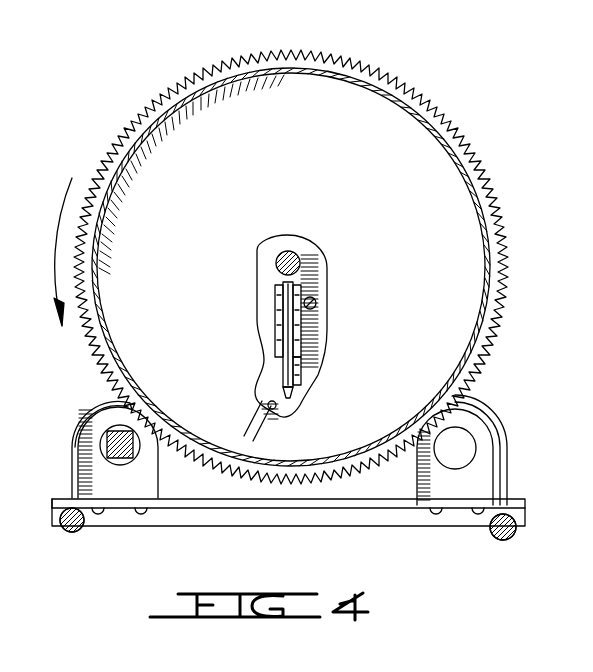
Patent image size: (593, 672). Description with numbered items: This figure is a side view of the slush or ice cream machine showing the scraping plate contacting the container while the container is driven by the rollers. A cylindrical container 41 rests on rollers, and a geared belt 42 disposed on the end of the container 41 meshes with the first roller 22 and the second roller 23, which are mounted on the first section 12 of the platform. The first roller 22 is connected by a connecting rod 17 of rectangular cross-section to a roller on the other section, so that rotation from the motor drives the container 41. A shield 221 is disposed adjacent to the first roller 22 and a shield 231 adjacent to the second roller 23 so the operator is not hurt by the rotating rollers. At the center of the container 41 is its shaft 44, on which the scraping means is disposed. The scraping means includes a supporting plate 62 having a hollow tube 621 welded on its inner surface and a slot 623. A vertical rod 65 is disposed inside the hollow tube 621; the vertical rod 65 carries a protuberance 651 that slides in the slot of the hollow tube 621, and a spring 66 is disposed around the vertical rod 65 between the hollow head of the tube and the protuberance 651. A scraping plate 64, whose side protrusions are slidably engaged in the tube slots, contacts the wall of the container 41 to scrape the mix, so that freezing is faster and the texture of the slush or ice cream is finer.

The first section 12 is at (55, 500).
The connecting rod 17 is at (100, 453).
The first roller 22 is at (113, 406).
The shield 221 is at (77, 441).
The second roller 23 is at (470, 406).
The shield 231 is at (510, 450).
The cylindrical container 41 is at (300, 66).
The geared belt 42 is at (358, 66).
The shaft 44 is at (289, 250).
The supporting plate 62 is at (320, 364).
The hollow tube 621 is at (278, 338).
The slot 623 is at (295, 392).
The scraping plate 64 is at (252, 432).
The vertical rod 65 is at (277, 322).
The protuberance 651 is at (304, 377).
The spring 66 is at (305, 337).